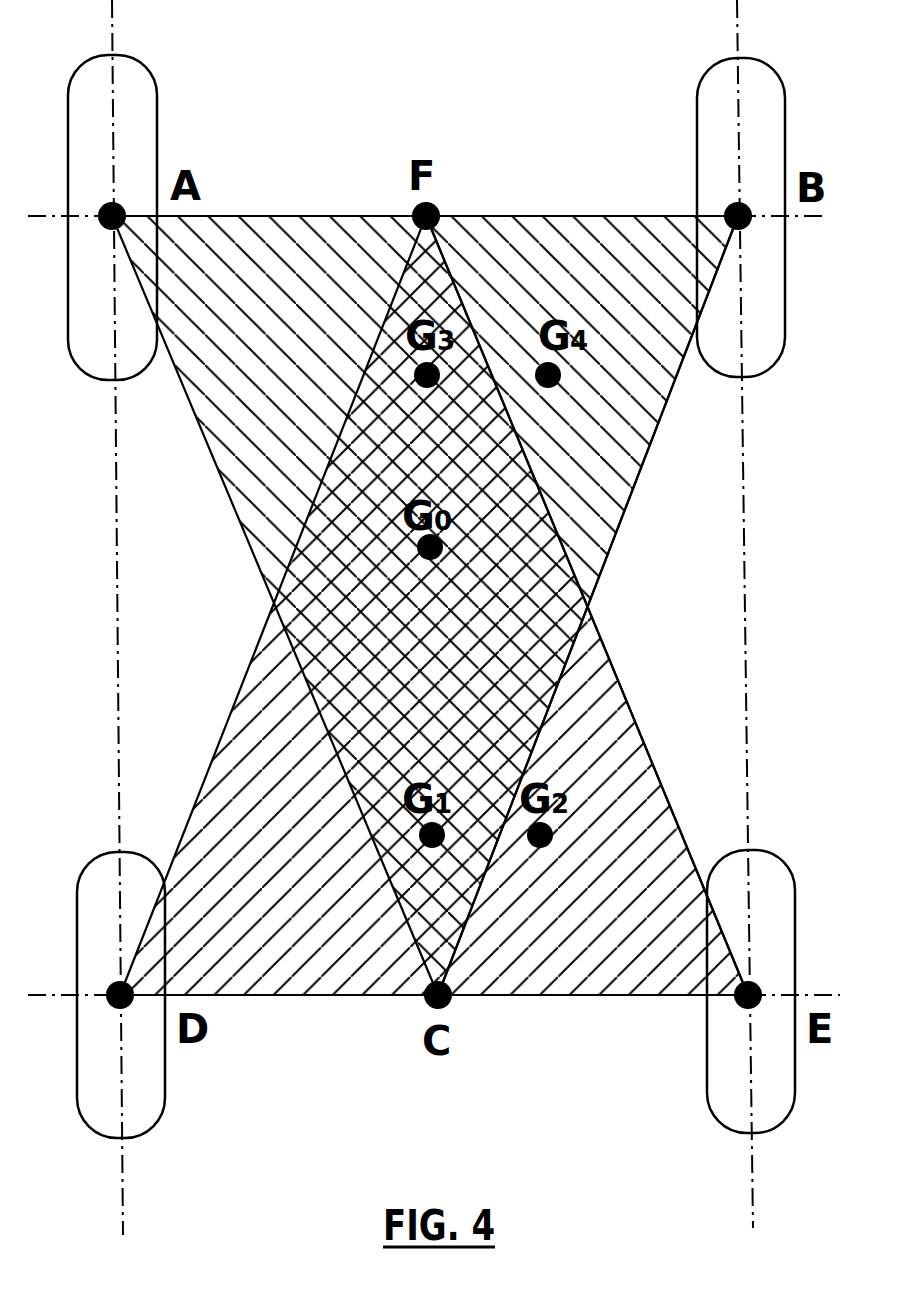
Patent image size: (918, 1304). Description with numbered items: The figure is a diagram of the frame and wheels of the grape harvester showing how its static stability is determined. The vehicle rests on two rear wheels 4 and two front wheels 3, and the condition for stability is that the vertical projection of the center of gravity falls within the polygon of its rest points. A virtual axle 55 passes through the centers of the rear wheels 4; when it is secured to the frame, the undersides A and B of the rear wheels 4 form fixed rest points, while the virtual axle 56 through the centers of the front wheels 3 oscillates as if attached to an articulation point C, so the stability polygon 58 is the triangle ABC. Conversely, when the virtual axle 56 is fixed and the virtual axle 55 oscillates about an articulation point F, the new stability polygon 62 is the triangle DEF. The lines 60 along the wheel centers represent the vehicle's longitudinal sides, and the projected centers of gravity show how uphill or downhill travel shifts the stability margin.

The front wheels 3 is at (150, 1093).
The rear wheels 4 is at (132, 107).
The virtual axle 55 is at (478, 217).
The virtual axle 56 is at (577, 995).
The stability polygon 58 is at (610, 545).
The longitudinal side line of the vehicle 60 is at (745, 605).
The stability polygon 62 is at (628, 692).